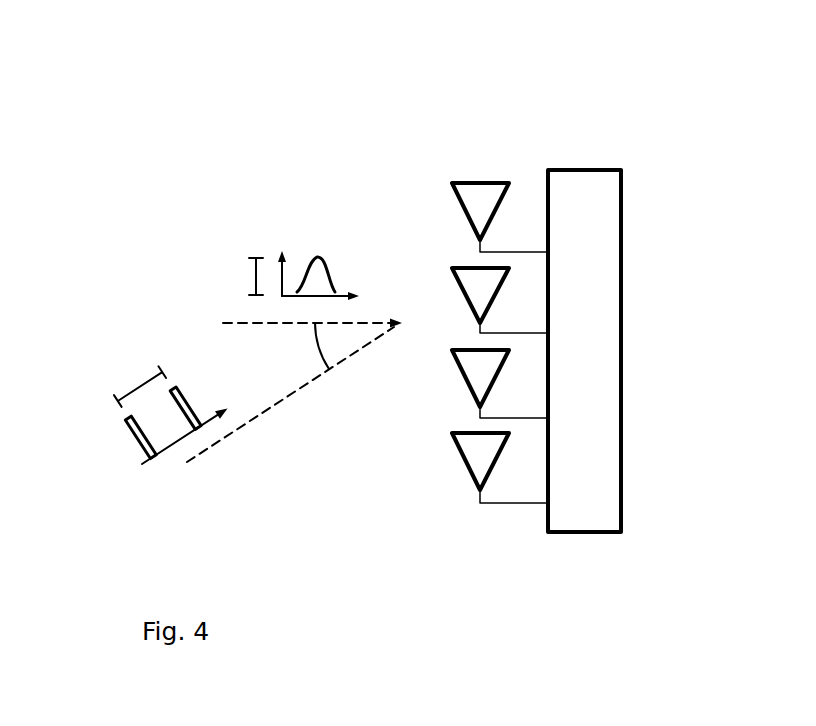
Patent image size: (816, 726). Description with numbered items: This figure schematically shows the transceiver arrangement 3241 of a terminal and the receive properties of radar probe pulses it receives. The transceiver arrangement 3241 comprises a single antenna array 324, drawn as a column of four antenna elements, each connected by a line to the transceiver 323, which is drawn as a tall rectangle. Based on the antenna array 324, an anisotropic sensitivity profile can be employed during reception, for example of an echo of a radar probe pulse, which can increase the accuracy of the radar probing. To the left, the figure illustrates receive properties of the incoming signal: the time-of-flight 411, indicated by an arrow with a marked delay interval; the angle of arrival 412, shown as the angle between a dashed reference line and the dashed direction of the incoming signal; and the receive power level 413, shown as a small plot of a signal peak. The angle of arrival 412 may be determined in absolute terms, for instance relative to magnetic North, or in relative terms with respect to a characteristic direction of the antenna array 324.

The transceiver arrangement 3241 is at (607, 125).
The transceiver 323 is at (607, 262).
The antenna array 324 is at (471, 162).
The time-of-flight 411 is at (120, 458).
The angle of arrival 412 is at (343, 372).
The receive power level 413 is at (322, 237).